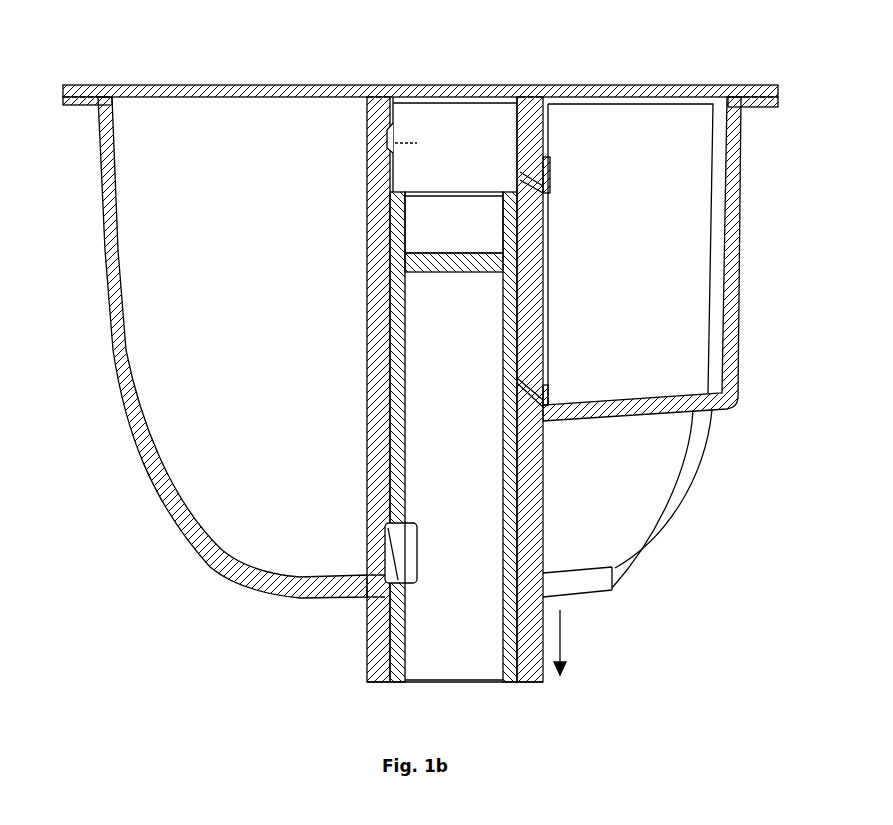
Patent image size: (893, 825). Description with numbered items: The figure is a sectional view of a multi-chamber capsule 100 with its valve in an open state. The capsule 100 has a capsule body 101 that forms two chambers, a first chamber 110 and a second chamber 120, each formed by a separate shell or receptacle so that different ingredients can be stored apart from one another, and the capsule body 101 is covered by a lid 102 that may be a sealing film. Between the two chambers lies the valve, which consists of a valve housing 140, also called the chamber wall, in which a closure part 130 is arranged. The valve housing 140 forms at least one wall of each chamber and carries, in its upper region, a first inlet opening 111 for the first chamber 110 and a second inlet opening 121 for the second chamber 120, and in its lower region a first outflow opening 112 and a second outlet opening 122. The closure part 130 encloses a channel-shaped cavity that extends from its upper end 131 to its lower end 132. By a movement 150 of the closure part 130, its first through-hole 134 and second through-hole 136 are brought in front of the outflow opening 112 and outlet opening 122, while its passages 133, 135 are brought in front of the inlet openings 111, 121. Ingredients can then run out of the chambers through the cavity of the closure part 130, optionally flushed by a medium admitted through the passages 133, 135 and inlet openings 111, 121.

The multi-chamber capsule 100 is at (128, 547).
The capsule body 101 is at (105, 232).
The lid 102 is at (200, 86).
The first chamber 110 is at (201, 347).
The first inlet opening 111 is at (395, 143).
The first outflow opening 112 is at (383, 565).
The second chamber 120 is at (690, 315).
The second inlet opening 121 is at (541, 186).
The second outlet opening 122 is at (546, 396).
The closure part 130 is at (463, 380).
The upper end of the closure part 131 is at (455, 117).
The lower end of the closure part 132 is at (430, 681).
The first passage 133 is at (392, 132).
The first through-hole 134 is at (388, 533).
The second passage 135 is at (541, 157).
The second through-hole 136 is at (540, 372).
The valve housing 140 is at (370, 245).
The movement of the closure part 150 is at (562, 632).